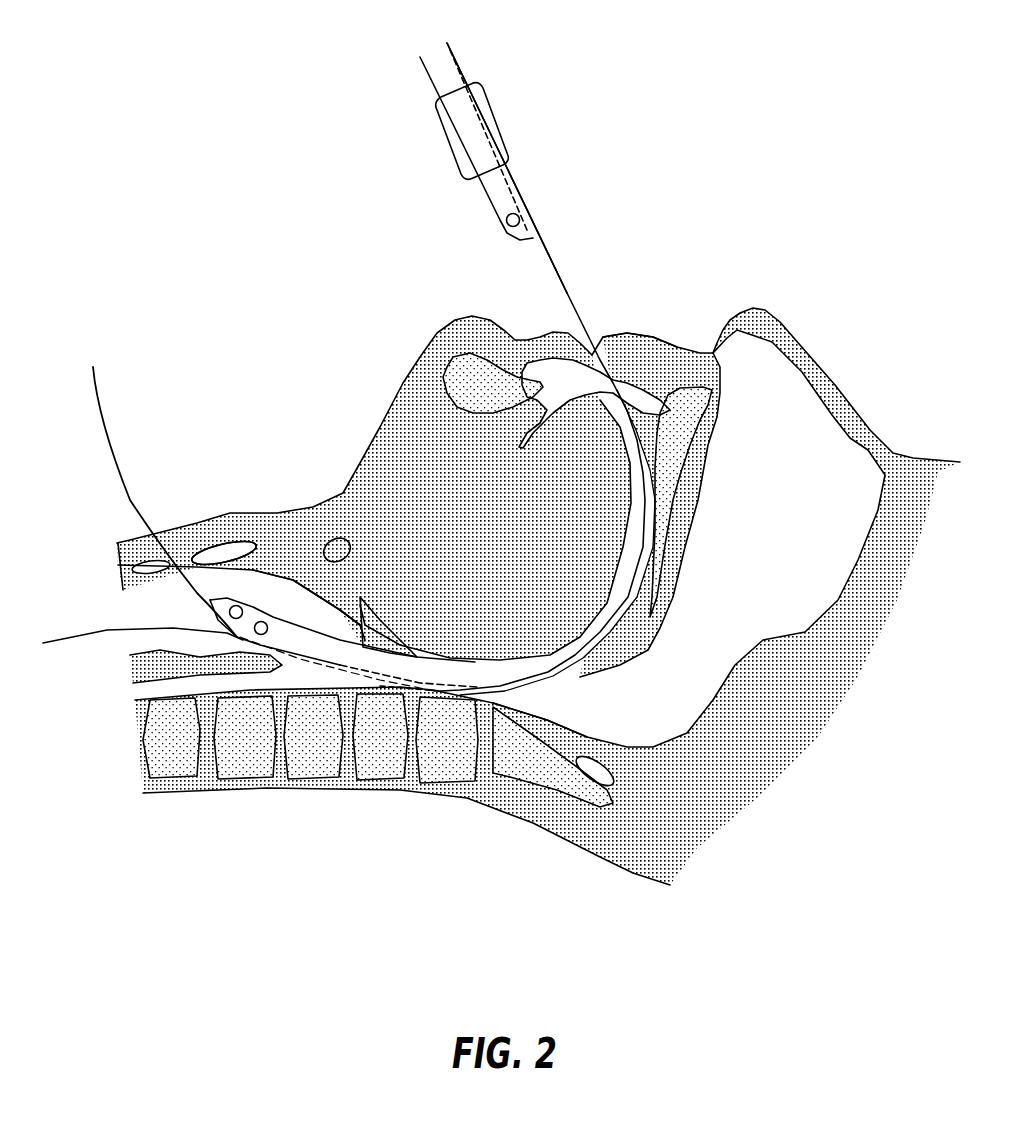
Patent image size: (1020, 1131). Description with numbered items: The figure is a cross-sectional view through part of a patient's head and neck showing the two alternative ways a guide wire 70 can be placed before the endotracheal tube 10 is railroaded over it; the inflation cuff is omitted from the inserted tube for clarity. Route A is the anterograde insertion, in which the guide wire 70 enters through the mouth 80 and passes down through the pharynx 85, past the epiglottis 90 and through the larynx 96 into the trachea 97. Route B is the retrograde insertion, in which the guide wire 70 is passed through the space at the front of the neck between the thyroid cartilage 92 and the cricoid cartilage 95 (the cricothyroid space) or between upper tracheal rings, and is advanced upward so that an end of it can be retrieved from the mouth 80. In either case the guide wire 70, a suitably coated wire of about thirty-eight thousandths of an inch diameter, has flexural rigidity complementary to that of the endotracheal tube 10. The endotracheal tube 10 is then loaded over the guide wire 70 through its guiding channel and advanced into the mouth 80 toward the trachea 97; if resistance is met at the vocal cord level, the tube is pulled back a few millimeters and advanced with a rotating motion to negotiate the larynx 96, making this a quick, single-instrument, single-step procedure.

The endotracheal tube 10 is at (481, 62).
The guide wire 70 is at (560, 287).
The mouth 80 is at (600, 360).
The pharynx 85 is at (547, 680).
The epiglottis 90 is at (392, 645).
The thyroid cartilage 92 is at (120, 567).
The cricoid cartilage 95 is at (222, 555).
The larynx 96 is at (363, 640).
The trachea 97 is at (297, 585).
The anterograde guide wire insertion A is at (543, 260).
The retrograde guide wire insertion B is at (93, 380).